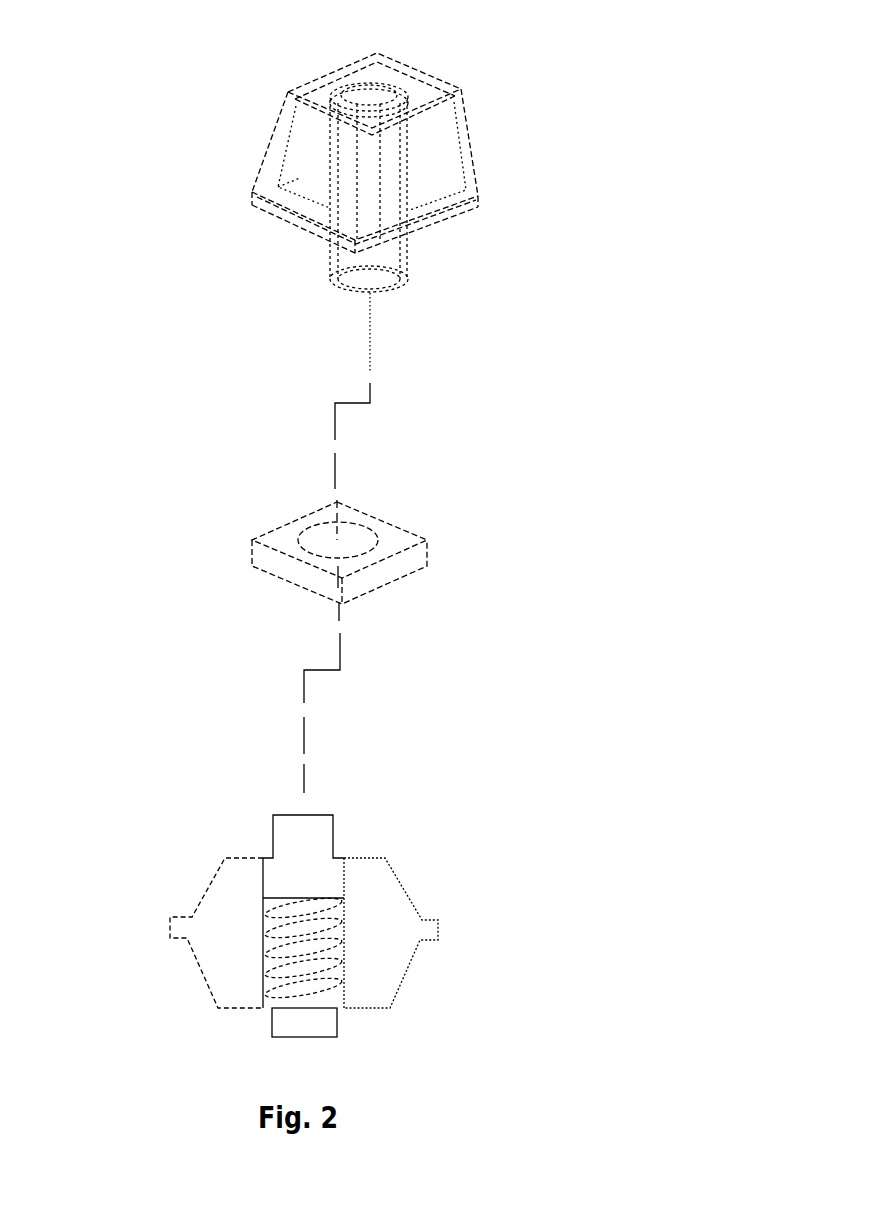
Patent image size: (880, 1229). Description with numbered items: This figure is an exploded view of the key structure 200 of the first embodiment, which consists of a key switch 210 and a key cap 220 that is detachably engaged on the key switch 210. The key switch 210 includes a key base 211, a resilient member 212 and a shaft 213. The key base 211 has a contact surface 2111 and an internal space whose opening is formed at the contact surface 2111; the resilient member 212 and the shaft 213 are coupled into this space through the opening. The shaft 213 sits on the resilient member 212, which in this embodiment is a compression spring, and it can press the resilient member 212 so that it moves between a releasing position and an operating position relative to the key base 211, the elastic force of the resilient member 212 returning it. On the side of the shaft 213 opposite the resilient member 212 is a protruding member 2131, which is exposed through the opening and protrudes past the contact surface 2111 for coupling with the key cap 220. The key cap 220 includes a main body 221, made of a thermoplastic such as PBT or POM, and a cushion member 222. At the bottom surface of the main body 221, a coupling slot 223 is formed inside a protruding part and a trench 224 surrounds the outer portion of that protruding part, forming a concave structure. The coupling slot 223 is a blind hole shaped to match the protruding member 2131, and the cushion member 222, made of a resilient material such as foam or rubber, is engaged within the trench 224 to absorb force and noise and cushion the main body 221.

The key structure 200 is at (80, 62).
The key switch 210 is at (323, 909).
The key base 211 is at (223, 922).
The contact surface 2111 is at (372, 857).
The resilient member 212 is at (335, 988).
The shaft 213 is at (315, 909).
The protruding member 2131 is at (333, 815).
The key cap 220 is at (410, 164).
The main body 221 is at (470, 142).
The cushion member 222 is at (408, 558).
The coupling slot 223 is at (407, 290).
The trench 224 is at (382, 254).